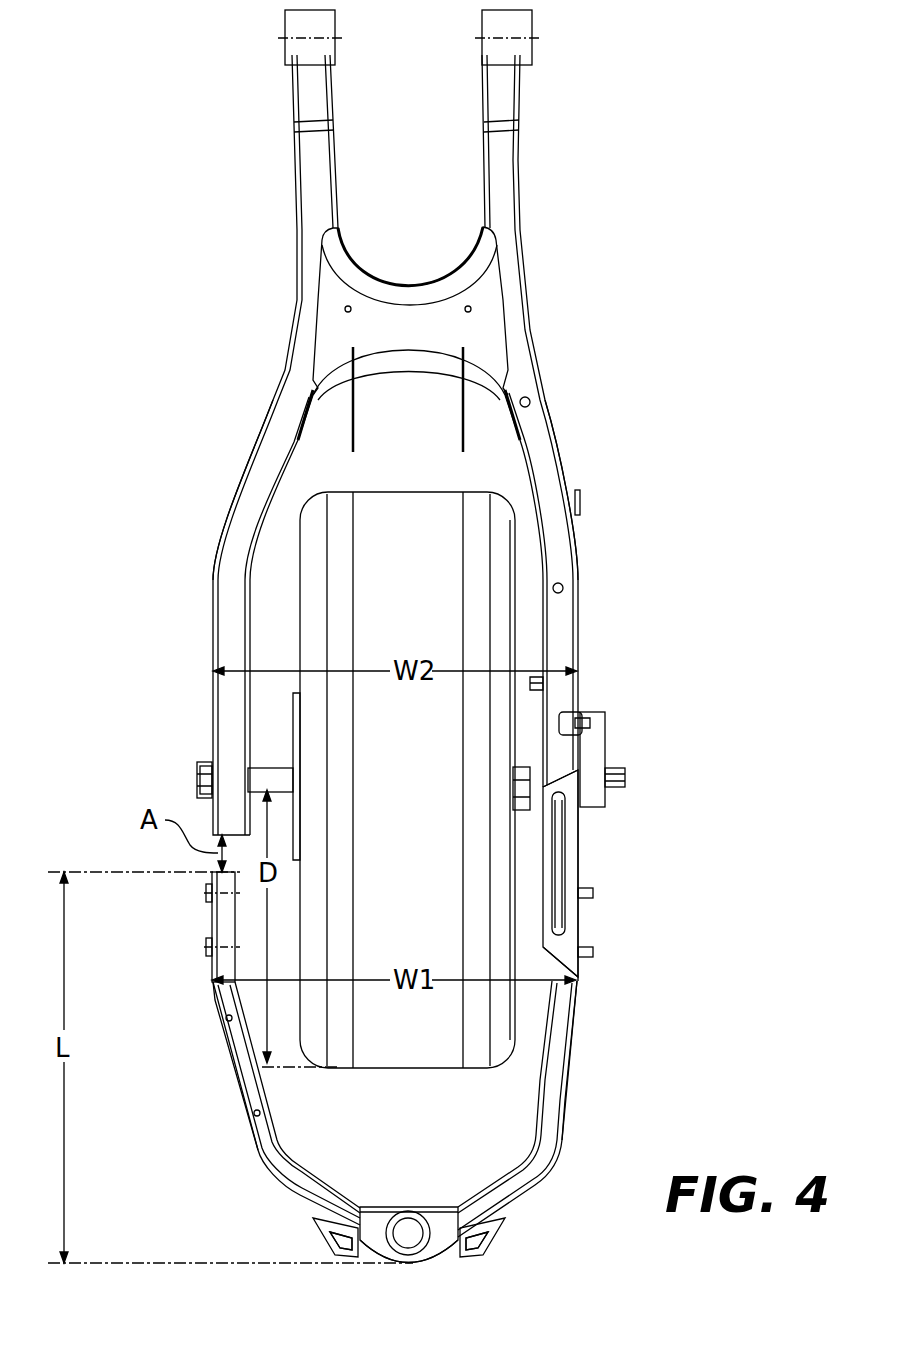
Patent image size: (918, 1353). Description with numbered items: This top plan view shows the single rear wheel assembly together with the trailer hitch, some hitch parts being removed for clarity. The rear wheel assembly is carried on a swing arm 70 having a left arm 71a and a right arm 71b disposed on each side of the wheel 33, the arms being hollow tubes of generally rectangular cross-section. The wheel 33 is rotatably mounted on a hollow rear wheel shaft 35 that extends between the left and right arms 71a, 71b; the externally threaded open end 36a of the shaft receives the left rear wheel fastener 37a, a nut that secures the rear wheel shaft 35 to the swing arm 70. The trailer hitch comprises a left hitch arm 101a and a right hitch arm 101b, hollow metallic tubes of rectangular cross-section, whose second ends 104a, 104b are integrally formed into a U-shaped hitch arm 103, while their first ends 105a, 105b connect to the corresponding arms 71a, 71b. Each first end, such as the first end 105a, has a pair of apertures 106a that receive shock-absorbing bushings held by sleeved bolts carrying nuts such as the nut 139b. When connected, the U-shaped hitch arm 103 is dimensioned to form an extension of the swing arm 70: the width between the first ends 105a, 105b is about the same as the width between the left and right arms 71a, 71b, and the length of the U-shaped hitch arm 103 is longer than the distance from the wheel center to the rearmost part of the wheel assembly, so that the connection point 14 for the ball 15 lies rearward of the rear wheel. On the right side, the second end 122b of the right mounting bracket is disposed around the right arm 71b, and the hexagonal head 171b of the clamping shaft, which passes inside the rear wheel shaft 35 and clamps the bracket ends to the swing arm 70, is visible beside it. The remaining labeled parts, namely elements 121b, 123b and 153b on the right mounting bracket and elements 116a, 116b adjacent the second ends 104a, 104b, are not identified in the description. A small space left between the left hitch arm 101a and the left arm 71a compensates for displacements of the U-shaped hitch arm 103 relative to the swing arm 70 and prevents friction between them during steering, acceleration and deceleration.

The swing arm 70 is at (503, 217).
The left arm 71a is at (248, 478).
The right arm 71b is at (560, 470).
The wheel 33 is at (500, 560).
The rear wheel shaft 35 is at (270, 775).
The open end 36a is at (197, 780).
The left rear wheel fastener 37a is at (205, 760).
The first end of left hitch arm 105a is at (222, 965).
The apertures 106a is at (204, 893).
The left hitch arm 101a is at (237, 1045).
The right hitch arm 101b is at (555, 1102).
The U-shaped hitch arm 103 is at (243, 1170).
The ball 15 is at (408, 1233).
The connection point 14 is at (418, 1268).
The second end of left hitch arm 104a is at (312, 1212).
The second end of right hitch arm 104b is at (512, 1195).
The left reinforcing plate 116a is at (323, 1252).
The right reinforcing plate 116b is at (492, 1240).
The first end of right hitch arm 105b is at (580, 982).
The second end of right mounting bracket 122b is at (560, 838).
The bracket plate 153b is at (605, 802).
The hexagonal head 171b is at (626, 778).
The upper edge of bracket 123b is at (580, 870).
The nut 139b is at (594, 893).
The lower edge of bracket 121b is at (585, 965).